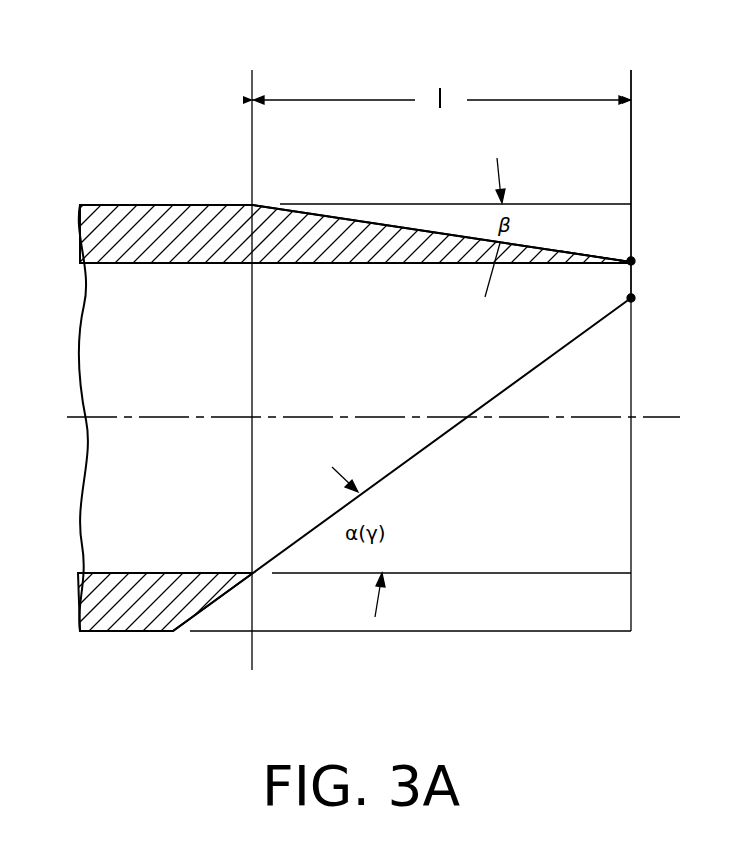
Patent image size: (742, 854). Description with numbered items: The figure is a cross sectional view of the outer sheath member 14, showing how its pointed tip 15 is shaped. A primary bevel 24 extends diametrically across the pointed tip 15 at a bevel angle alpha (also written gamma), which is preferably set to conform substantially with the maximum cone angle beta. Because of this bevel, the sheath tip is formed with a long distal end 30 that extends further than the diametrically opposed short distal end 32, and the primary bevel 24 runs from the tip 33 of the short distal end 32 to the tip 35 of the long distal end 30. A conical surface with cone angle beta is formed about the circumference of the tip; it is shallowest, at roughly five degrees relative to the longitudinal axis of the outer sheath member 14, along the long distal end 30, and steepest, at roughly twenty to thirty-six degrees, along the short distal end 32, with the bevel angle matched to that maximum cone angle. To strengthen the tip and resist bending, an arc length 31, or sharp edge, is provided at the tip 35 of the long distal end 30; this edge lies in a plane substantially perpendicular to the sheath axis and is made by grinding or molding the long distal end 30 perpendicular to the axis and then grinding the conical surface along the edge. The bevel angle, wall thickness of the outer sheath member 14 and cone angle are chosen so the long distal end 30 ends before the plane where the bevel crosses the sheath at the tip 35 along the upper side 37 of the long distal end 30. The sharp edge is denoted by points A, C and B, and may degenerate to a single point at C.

The outer sheath member 14 is at (115, 204).
The pointed tip 15 is at (595, 192).
The primary bevel 24 is at (443, 435).
The long distal end 30 is at (355, 264).
The arc length 31 is at (633, 259).
The short distal end 32 is at (167, 572).
The tip of the short distal end 33 is at (257, 575).
The tip of the long distal end 35 is at (634, 296).
The upper side 37 is at (627, 267).